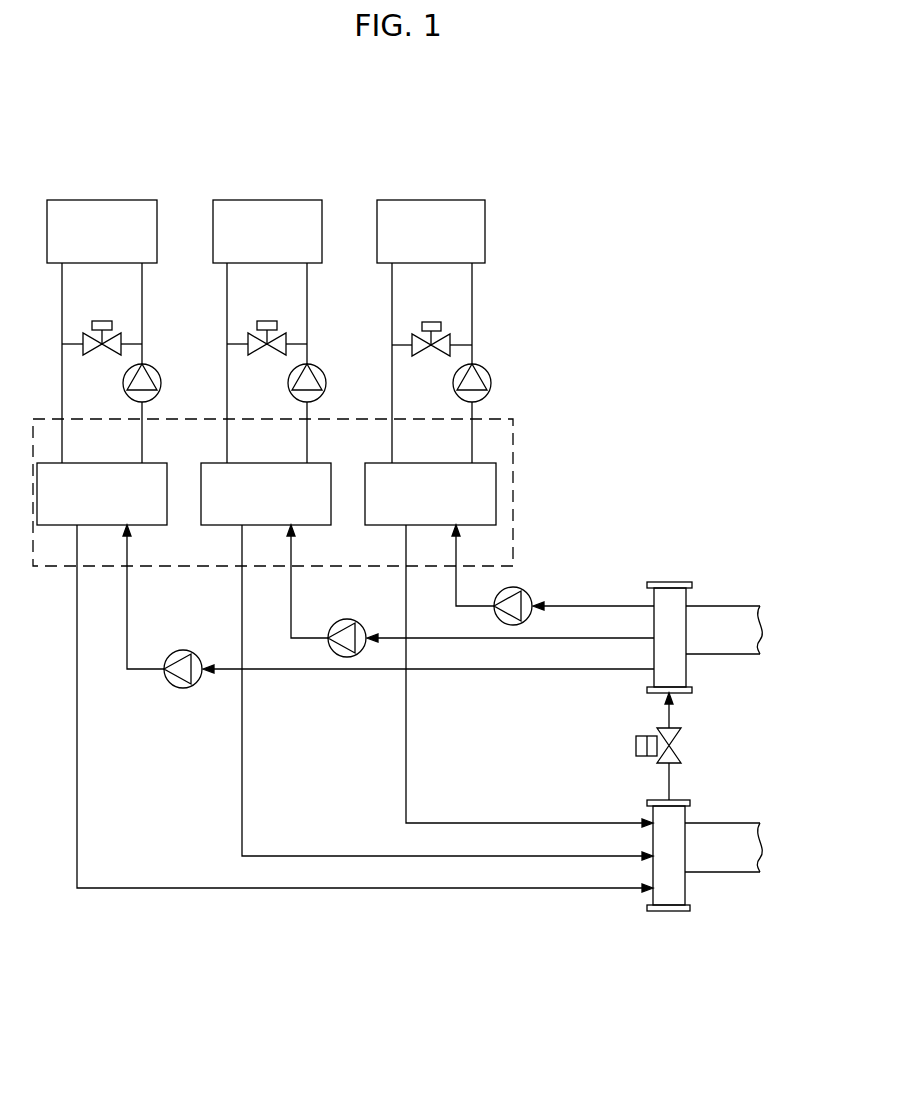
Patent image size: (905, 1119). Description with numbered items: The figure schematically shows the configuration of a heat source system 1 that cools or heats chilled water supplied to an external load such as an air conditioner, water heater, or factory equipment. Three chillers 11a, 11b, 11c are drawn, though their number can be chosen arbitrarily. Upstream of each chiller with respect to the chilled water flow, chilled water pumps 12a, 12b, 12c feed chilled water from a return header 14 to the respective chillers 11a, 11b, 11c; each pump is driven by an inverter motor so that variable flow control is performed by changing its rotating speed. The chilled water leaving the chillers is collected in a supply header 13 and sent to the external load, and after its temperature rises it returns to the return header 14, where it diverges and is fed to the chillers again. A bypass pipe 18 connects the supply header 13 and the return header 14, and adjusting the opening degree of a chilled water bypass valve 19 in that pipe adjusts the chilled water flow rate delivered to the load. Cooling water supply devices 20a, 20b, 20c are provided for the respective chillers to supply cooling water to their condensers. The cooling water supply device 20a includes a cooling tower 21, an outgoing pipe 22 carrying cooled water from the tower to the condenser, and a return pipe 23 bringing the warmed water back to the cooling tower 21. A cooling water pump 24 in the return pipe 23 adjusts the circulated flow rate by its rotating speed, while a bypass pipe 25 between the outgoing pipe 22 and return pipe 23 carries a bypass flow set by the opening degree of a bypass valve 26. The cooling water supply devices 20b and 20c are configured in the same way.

The heat source system 1 is at (692, 274).
The chiller 11a is at (496, 495).
The chiller 11b is at (334, 495).
The chiller 11c is at (170, 495).
The chilled water pump 12a is at (528, 590).
The chilled water pump 12b is at (363, 624).
The chilled water pump 12c is at (197, 655).
The supply header 13 is at (672, 911).
The return header 14 is at (668, 582).
The bypass pipe 18 is at (669, 780).
The chilled water bypass valve 19 is at (636, 745).
The cooling water supply device 20a is at (479, 170).
The cooling water supply device 20b is at (316, 170).
The cooling water supply device 20c is at (151, 170).
The cooling tower 21 is at (432, 200).
The outgoing pipe 22 is at (392, 305).
The return pipe 23 is at (472, 315).
The cooling water pump 24 is at (492, 378).
The bypass pipe 25 is at (404, 330).
The bypass valve 26 is at (440, 358).